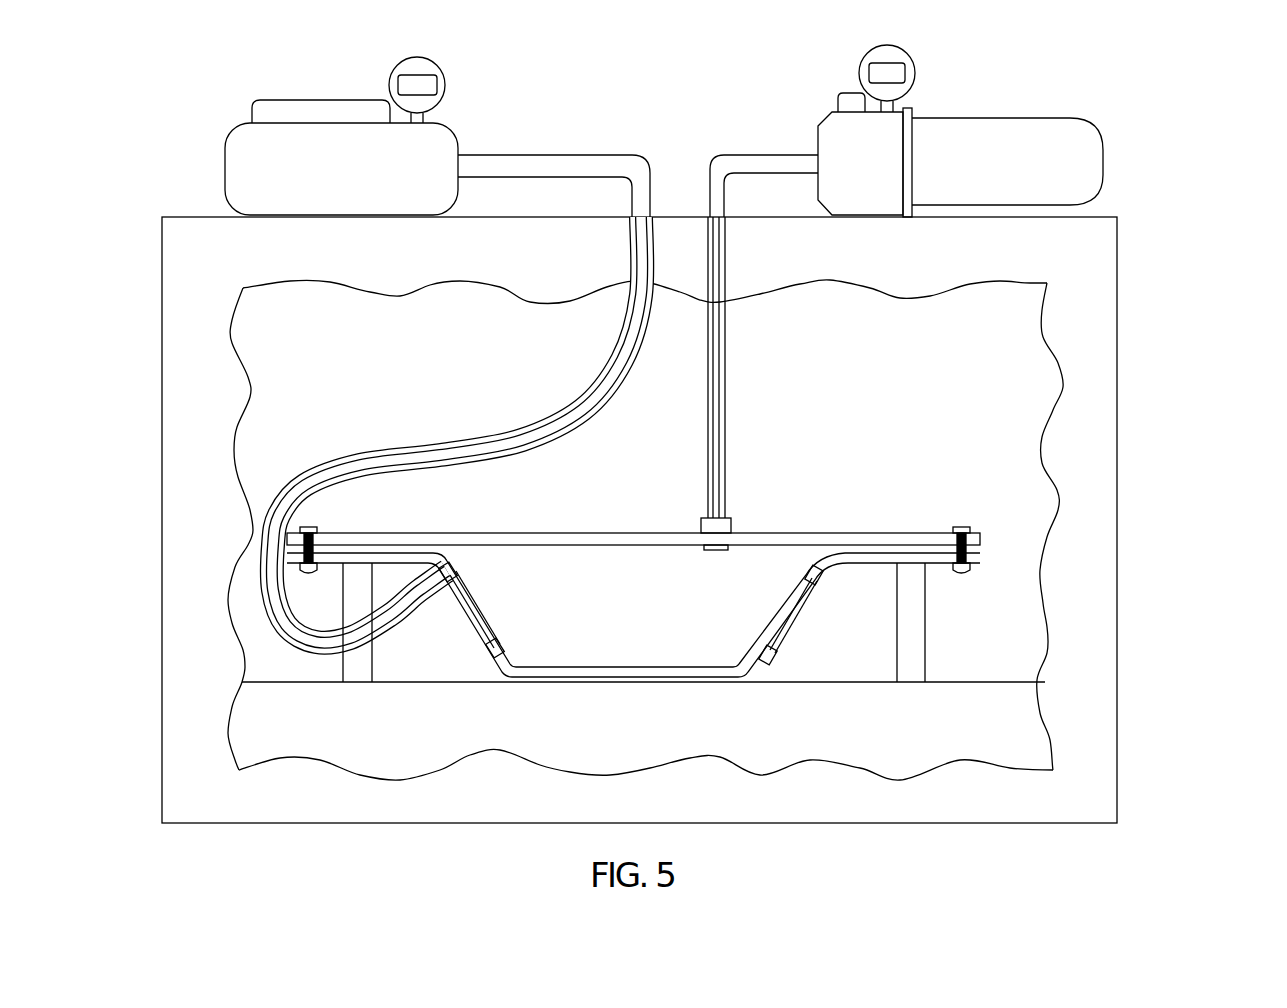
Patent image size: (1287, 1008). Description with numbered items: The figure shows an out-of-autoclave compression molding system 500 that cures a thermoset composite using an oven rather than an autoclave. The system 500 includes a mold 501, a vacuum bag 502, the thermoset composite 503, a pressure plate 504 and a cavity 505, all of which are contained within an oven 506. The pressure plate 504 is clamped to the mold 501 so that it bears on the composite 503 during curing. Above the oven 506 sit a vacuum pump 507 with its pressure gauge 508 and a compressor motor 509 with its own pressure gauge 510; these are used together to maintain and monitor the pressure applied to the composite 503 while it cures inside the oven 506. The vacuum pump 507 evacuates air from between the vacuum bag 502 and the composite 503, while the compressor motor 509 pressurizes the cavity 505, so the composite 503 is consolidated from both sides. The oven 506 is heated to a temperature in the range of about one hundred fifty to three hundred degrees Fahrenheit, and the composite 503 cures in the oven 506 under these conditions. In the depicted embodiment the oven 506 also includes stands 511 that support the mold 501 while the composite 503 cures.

The out-of-autoclave compression molding system 500 is at (153, 98).
The mold 501 is at (802, 625).
The vacuum bag 502 is at (657, 667).
The thermoset composite 503 is at (492, 650).
The pressure plate 504 is at (818, 533).
The cavity 505 is at (563, 597).
The oven 506 is at (165, 498).
The vacuum pump 507 is at (225, 165).
The pressure gauge 508 is at (447, 71).
The compressor motor 509 is at (1103, 157).
The pressure gauge 510 is at (915, 63).
The stands 511 is at (925, 675).